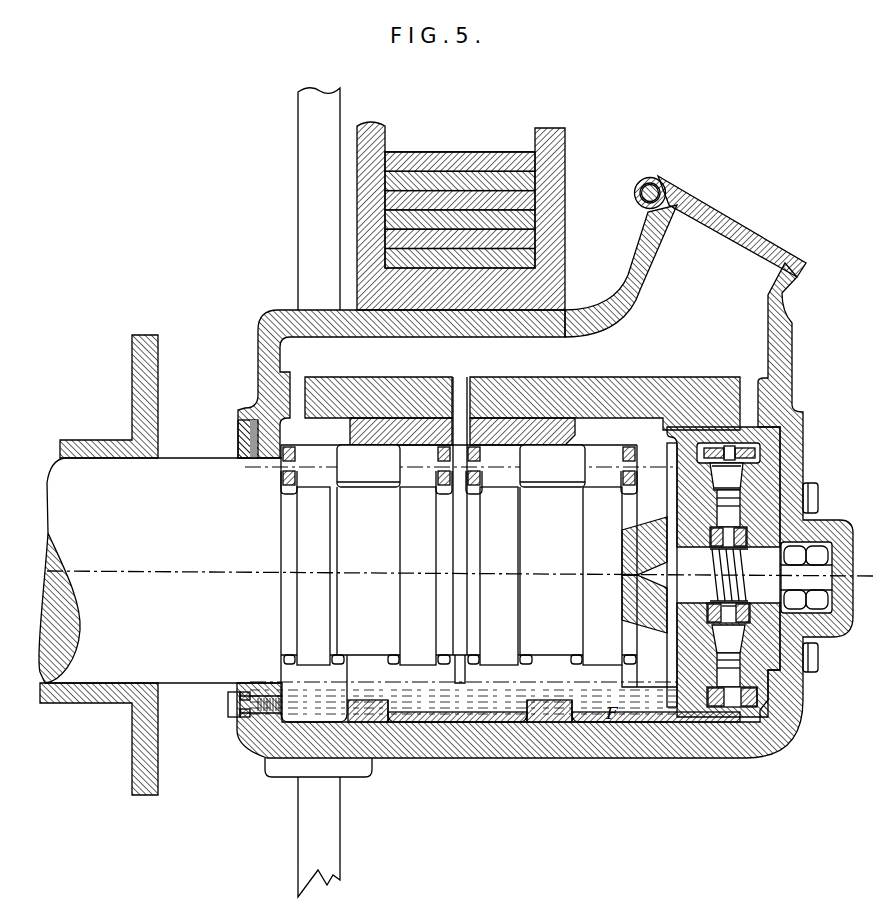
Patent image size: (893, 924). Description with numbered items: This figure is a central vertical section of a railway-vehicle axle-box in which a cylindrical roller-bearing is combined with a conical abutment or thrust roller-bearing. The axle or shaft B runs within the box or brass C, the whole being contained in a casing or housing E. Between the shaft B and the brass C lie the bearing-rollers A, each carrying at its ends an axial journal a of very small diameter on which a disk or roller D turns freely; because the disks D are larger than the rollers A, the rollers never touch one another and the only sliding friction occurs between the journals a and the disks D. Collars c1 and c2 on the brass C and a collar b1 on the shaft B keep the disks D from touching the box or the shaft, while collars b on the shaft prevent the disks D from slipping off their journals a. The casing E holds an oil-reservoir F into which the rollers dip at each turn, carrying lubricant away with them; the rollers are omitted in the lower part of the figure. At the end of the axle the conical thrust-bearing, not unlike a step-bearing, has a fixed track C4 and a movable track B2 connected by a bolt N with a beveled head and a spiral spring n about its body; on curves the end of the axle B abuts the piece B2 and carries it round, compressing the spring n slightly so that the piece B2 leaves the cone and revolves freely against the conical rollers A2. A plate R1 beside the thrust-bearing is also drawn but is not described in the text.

The shaft B is at (457, 570).
The collars b is at (490, 585).
The collar b1 is at (459, 576).
The bearing-rollers A is at (461, 466).
The axial journal a is at (481, 471).
The disk or roller D is at (453, 459).
The box or brass C is at (588, 397).
The collar c1 is at (576, 445).
The collar c2 is at (350, 444).
The casing or housing E is at (545, 510).
The oil-reservoir F is at (685, 256).
The plate R1 is at (673, 484).
The bolt N is at (717, 575).
The conical thrust rollers A2 is at (728, 558).
The spiral spring n is at (732, 606).
The movable track B2 is at (723, 532).
The fixed track C4 is at (728, 660).